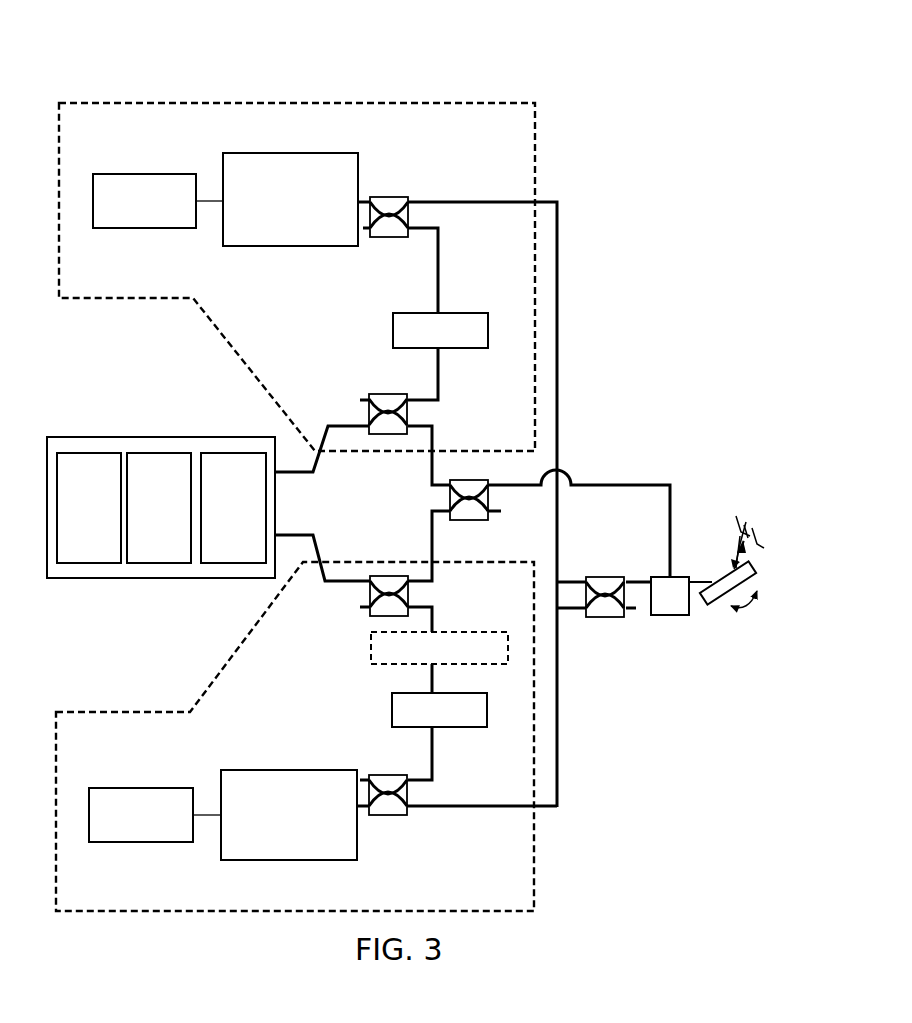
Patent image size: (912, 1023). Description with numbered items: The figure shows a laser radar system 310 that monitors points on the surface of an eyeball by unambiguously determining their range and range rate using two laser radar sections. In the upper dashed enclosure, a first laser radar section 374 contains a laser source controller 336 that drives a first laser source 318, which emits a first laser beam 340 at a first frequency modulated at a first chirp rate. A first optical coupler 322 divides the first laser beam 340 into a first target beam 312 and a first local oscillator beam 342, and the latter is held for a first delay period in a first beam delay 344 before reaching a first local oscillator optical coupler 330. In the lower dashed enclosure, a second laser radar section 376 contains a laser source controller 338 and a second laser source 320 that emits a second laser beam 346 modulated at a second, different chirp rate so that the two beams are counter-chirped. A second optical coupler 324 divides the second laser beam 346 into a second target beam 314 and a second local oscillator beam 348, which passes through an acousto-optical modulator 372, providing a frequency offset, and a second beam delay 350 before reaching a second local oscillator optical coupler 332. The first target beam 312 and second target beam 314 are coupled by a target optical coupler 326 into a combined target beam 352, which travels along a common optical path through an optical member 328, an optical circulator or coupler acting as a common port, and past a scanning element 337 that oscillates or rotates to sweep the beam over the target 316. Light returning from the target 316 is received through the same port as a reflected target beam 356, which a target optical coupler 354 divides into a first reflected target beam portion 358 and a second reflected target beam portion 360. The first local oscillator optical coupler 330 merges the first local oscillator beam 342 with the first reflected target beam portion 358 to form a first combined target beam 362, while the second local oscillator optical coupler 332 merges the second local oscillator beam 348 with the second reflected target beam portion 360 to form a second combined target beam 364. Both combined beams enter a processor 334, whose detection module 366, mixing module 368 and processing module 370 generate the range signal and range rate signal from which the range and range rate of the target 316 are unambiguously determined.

The laser radar system 310 is at (76, 71).
The first target beam 312 is at (559, 339).
The second target beam 314 is at (466, 809).
The target 316 is at (726, 511).
The first laser source 318 is at (288, 153).
The second laser source 320 is at (290, 770).
The first optical coupler 322 is at (396, 196).
The second optical coupler 324 is at (382, 774).
The target optical coupler 326 is at (605, 576).
The optical member 328 is at (681, 577).
The first local oscillator optical coupler 330 is at (388, 393).
The second local oscillator optical coupler 332 is at (385, 575).
The processor 334 is at (154, 495).
The laser source controller 336 is at (140, 174).
The scanning element 337 is at (729, 605).
The laser source controller 338 is at (142, 788).
The first laser beam 340 is at (363, 202).
The first local oscillator beam 342 is at (440, 252).
The first beam delay 344 is at (459, 313).
The second laser beam 346 is at (362, 809).
The second local oscillator beam 348 is at (436, 780).
The second beam delay 350 is at (478, 728).
The combined target beam 352 is at (641, 580).
The target optical coupler 354 is at (450, 495).
The reflected target beam 356 is at (642, 485).
The first reflected target beam portion 358 is at (434, 440).
The second reflected target beam portion 360 is at (434, 538).
The first combined target beam 362 is at (321, 440).
The second combined target beam 364 is at (322, 580).
The detection module 366 is at (231, 453).
The mixing module 368 is at (161, 453).
The processing module 370 is at (91, 453).
The acousto-optical modulator 372 is at (482, 632).
The first laser radar section 374 is at (539, 151).
The second laser radar section 376 is at (538, 863).